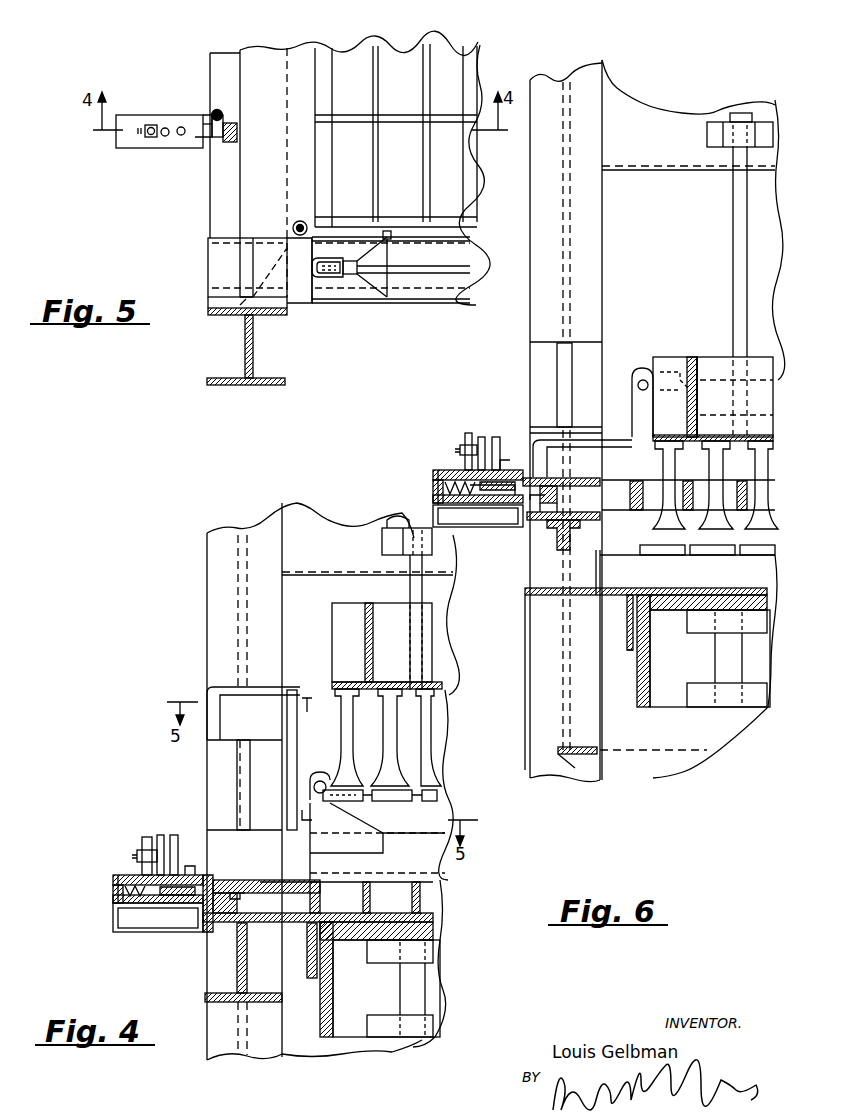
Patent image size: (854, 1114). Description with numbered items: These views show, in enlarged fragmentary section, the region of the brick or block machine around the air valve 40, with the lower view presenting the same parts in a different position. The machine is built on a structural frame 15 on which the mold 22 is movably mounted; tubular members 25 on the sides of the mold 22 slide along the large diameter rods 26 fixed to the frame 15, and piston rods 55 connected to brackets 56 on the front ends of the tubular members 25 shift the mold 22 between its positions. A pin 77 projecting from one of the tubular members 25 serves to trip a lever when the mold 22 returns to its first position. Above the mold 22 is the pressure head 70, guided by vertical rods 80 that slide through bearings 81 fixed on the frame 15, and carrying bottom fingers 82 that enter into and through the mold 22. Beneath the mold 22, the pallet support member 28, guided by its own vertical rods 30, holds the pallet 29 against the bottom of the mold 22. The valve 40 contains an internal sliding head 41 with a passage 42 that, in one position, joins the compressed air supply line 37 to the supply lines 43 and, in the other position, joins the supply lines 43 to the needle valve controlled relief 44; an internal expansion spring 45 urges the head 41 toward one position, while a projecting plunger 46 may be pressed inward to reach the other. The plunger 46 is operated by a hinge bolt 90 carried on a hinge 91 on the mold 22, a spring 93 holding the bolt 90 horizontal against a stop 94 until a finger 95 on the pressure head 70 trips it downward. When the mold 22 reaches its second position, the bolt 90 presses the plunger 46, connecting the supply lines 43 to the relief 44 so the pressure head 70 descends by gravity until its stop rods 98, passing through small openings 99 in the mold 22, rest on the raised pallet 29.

In FIG. 5, the structural frame 15 is at (205, 222).
In FIG. 6, the structural frame 15 is at (528, 312).
In FIG. 4, the structural frame 15 is at (205, 552).
In FIG. 5, the mold 22 is at (236, 197).
In FIG. 6, the mold 22 is at (640, 513).
In FIG. 4, the mold 22 is at (423, 905).
In FIG. 5, the tubular members 25 is at (405, 296).
In FIG. 6, the tubular members 25 is at (745, 468).
In FIG. 4, the tubular members 25 is at (432, 862).
In FIG. 5, the large diameter rods 26 is at (300, 280).
In FIG. 6, the large diameter rods 26 is at (618, 438).
In FIG. 4, the large diameter rods 26 is at (297, 862).
In FIG. 6, the pallet support member 28 is at (636, 680).
In FIG. 4, the pallet support member 28 is at (319, 993).
In FIG. 6, the pallet 29 is at (760, 595).
In FIG. 4, the pallet 29 is at (433, 918).
In FIG. 6, the vertical rods 30 is at (718, 712).
In FIG. 4, the vertical rods 30 is at (410, 985).
In FIG. 5, the compressed air supply line 37 is at (184, 127).
In FIG. 6, the compressed air supply line 37 is at (496, 437).
In FIG. 4, the compressed air supply line 37 is at (175, 835).
In FIG. 5, the valve 40 is at (125, 150).
In FIG. 6, the valve 40 is at (436, 468).
In FIG. 4, the valve 40 is at (118, 878).
In FIG. 6, the internal sliding head 41 is at (505, 527).
In FIG. 4, the internal sliding head 41 is at (165, 932).
In FIG. 6, the passage 42 is at (490, 527).
In FIG. 4, the passage 42 is at (145, 932).
In FIG. 5, the supply lines 43 is at (165, 136).
In FIG. 6, the supply lines 43 is at (481, 437).
In FIG. 4, the supply lines 43 is at (160, 835).
In FIG. 5, the needle valve controlled relief 44 is at (151, 125).
In FIG. 6, the needle valve controlled relief 44 is at (468, 433).
In FIG. 4, the needle valve controlled relief 44 is at (147, 837).
In FIG. 6, the internal expansion spring 45 is at (450, 527).
In FIG. 4, the internal expansion spring 45 is at (113, 897).
In FIG. 5, the projecting plunger 46 is at (200, 135).
In FIG. 6, the projecting plunger 46 is at (505, 465).
In FIG. 4, the projecting plunger 46 is at (190, 866).
In FIG. 5, the piston rods 55 is at (430, 270).
In FIG. 6, the piston rods 55 is at (712, 375).
In FIG. 4, the piston rods 55 is at (412, 785).
In FIG. 5, the brackets 56 is at (345, 297).
In FIG. 6, the brackets 56 is at (633, 397).
In FIG. 4, the brackets 56 is at (352, 824).
In FIG. 6, the pressure head 70 is at (662, 355).
In FIG. 4, the pressure head 70 is at (435, 655).
In FIG. 5, the pin 77 is at (389, 232).
In FIG. 6, the vertical rods 80 is at (733, 205).
In FIG. 4, the vertical rods 80 is at (422, 597).
In FIG. 6, the bearings 81 is at (748, 113).
In FIG. 4, the bearings 81 is at (400, 518).
In FIG. 6, the bottom fingers 82 is at (660, 555).
In FIG. 4, the bottom fingers 82 is at (395, 735).
In FIG. 5, the hinge bolt 90 is at (223, 115).
In FIG. 6, the hinge bolt 90 is at (560, 550).
In FIG. 4, the hinge bolt 90 is at (208, 932).
In FIG. 6, the hinge 91 is at (555, 495).
In FIG. 4, the hinge 91 is at (240, 880).
In FIG. 6, the spring 93 is at (545, 520).
In FIG. 4, the spring 93 is at (237, 902).
In FIG. 5, the stop 94 is at (230, 142).
In FIG. 6, the stop 94 is at (555, 488).
In FIG. 4, the stop 94 is at (222, 880).
In FIG. 5, the finger 95 is at (220, 112).
In FIG. 6, the finger 95 is at (540, 440).
In FIG. 4, the finger 95 is at (247, 718).
In FIG. 5, the stop rods 98 is at (293, 228).
In FIG. 6, the stop rods 98 is at (602, 553).
In FIG. 4, the stop rods 98 is at (292, 752).
In FIG. 5, the small openings 99 is at (295, 222).